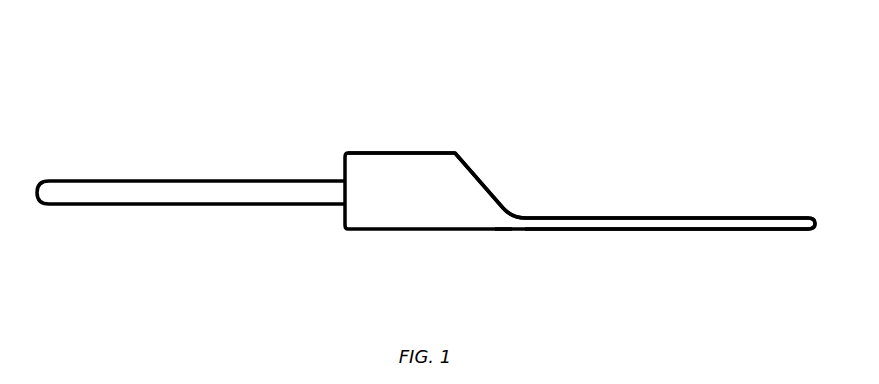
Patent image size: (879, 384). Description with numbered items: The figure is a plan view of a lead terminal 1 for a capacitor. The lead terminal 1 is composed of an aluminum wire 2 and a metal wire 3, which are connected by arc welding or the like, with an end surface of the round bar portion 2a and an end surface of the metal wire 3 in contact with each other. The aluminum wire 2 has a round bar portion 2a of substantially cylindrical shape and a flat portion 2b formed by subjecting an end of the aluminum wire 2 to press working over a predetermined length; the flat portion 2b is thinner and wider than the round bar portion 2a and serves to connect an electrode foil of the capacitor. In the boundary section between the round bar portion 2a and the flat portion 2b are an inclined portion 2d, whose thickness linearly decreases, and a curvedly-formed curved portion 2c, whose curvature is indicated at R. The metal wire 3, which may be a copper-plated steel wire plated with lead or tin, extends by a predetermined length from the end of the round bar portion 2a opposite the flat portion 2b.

The lead terminal 1 is at (470, 104).
The aluminum wire 2 is at (407, 252).
The round bar portion 2a is at (408, 155).
The flat portion 2b is at (643, 230).
The curved portion 2c is at (522, 205).
The inclined portion 2d is at (482, 183).
The radius of curvature R is at (502, 230).
The metal wire 3 is at (223, 181).